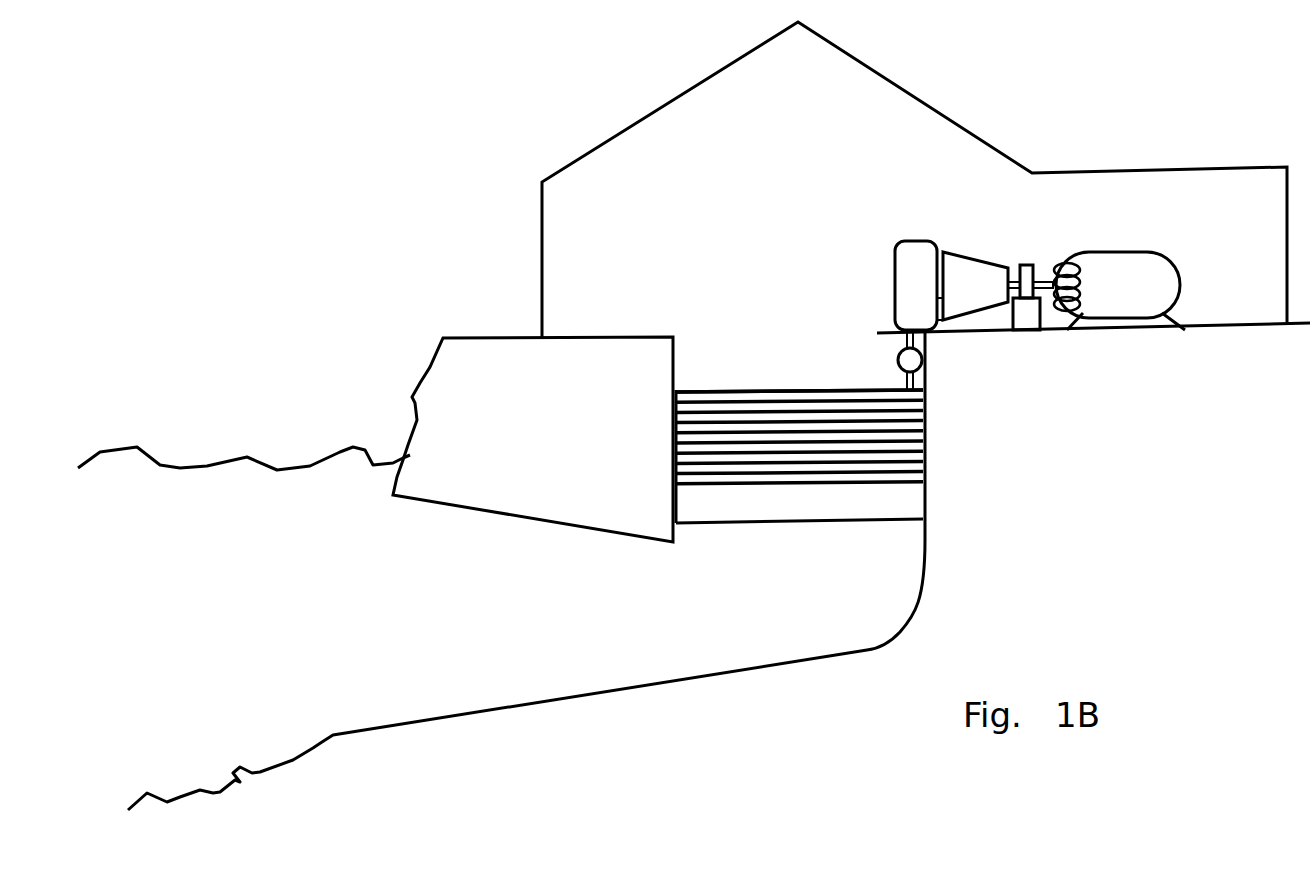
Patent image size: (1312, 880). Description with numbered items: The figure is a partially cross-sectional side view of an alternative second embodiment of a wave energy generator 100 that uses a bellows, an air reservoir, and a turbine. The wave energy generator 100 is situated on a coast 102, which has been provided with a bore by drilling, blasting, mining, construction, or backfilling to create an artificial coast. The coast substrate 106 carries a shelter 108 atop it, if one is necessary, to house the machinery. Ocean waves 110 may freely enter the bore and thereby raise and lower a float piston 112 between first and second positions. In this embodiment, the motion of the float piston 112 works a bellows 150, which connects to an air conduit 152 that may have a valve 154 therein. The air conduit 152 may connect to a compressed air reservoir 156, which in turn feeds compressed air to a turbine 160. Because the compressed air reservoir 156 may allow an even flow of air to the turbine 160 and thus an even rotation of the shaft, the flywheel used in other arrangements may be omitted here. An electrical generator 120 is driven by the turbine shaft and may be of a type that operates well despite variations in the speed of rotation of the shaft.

The wave energy generator 100 is at (342, 187).
The coast 102 is at (420, 382).
The coast substrate 106 is at (506, 438).
The shelter 108 is at (617, 130).
The ocean/waves 110 is at (143, 453).
The float piston 112 is at (857, 512).
The electrical generator 120 is at (1163, 278).
The bellows 150 is at (927, 455).
The air conduit 152 is at (927, 385).
The valve 154 is at (912, 358).
The compressed air reservoir 156 is at (910, 240).
The turbine 160 is at (980, 260).